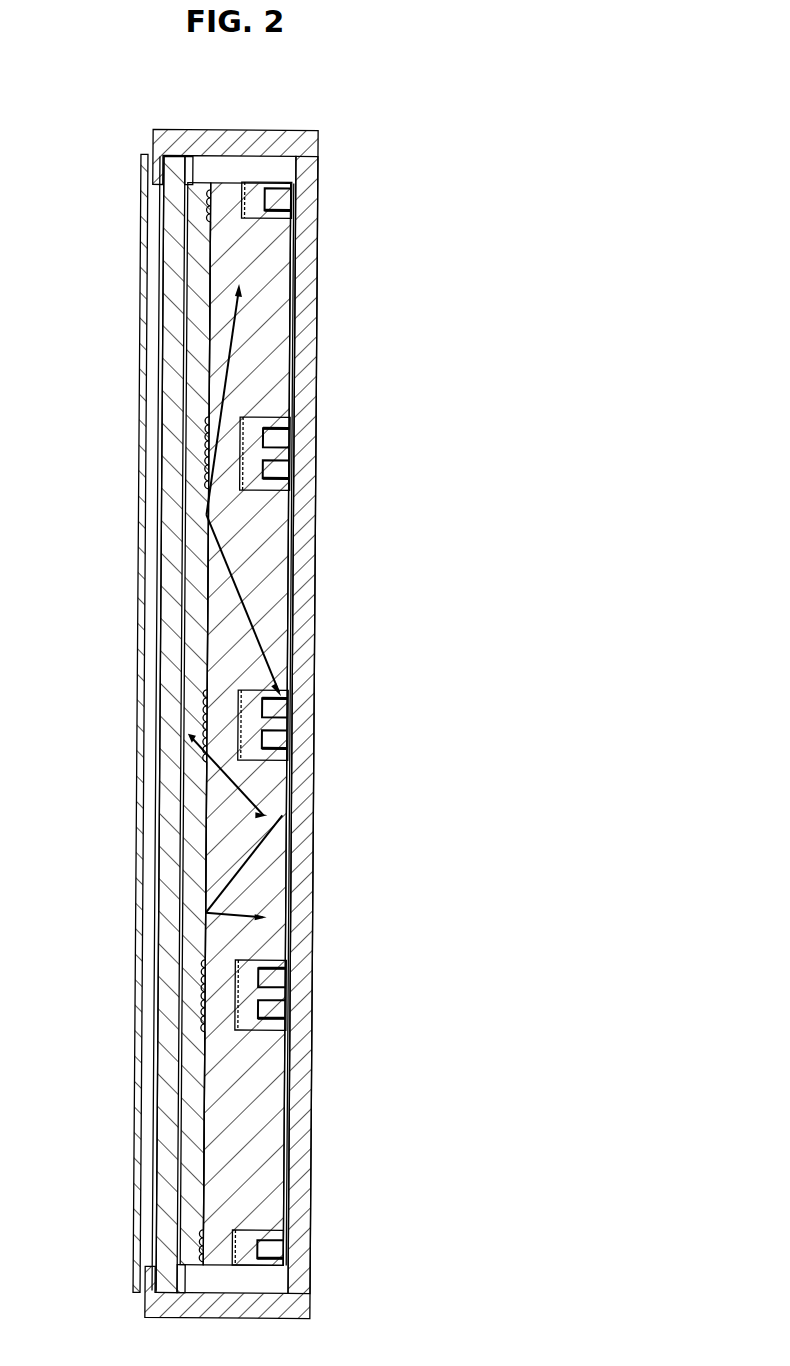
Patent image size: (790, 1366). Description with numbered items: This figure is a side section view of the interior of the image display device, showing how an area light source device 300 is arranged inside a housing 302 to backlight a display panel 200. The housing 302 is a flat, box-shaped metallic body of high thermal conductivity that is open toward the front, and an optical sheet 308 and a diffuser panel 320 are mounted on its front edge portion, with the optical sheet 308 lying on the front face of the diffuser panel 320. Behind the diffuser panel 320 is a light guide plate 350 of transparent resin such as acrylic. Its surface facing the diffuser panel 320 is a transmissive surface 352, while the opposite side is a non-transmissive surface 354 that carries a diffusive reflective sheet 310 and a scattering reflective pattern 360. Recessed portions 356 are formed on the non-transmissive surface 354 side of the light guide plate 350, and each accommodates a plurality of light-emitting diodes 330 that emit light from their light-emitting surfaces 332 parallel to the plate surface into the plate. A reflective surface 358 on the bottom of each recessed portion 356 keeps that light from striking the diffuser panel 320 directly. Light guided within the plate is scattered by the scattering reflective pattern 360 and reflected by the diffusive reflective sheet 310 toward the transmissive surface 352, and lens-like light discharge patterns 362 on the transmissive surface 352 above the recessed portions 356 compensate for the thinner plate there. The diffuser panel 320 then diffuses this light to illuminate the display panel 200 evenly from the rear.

The display panel 200 is at (142, 375).
The area light source device 300 is at (251, 112).
The housing 302 is at (209, 131).
The optical sheet 308 is at (160, 410).
The diffusive reflective sheet 310 is at (305, 570).
The diffuser panel 320 is at (172, 530).
The light-emitting diode 330 is at (278, 205).
The light-emitting surface 332 is at (283, 215).
The light guide plate 350 is at (222, 668).
The transmissive surface 352 is at (207, 628).
The non-transmissive surface 354 is at (292, 620).
The recessed portion 356 is at (246, 418).
The reflective surface 358 is at (207, 198).
The scattering reflective pattern 360 is at (292, 345).
The light discharge pattern 362 is at (207, 445).